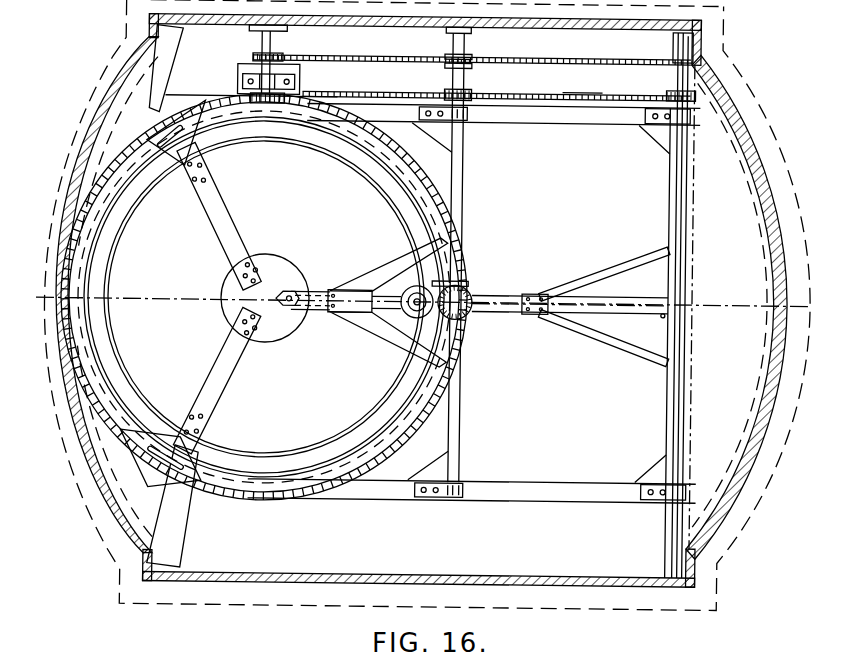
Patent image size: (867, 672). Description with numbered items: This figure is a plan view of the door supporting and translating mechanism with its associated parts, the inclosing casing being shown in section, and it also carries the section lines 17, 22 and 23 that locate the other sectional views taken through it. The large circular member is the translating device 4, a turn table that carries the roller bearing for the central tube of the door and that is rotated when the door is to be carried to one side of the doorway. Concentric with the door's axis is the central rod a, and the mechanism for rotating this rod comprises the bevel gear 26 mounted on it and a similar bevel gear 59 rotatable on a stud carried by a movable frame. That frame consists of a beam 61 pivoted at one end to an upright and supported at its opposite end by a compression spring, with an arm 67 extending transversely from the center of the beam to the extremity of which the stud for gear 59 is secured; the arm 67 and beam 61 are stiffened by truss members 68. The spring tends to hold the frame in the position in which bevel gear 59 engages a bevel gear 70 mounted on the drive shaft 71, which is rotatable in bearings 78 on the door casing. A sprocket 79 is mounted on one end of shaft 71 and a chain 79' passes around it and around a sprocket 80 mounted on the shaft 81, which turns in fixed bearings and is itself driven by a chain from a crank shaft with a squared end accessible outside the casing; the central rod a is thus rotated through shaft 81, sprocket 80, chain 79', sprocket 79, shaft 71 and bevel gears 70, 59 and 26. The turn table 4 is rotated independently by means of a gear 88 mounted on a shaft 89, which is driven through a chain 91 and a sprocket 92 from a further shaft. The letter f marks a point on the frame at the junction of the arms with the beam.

The translating device 4 is at (440, 384).
The section line 17— 17 is at (40, 322).
The section line 22— 22 is at (696, 153).
The section line 23— 23 is at (619, 21).
The bevel gear 26 is at (415, 311).
The bevel gear 59 is at (465, 317).
The beam 61 is at (686, 385).
The arm 67 is at (506, 292).
The truss member 68 is at (602, 276).
The bevel gear 70 is at (459, 280).
The drive shaft 71 is at (463, 181).
The bearings 78 is at (465, 112).
The sprocket 79 is at (496, 83).
The chain 79' is at (583, 82).
The sprocket 80 is at (675, 89).
The shaft 81 is at (674, 50).
The gear 88 is at (270, 105).
The shaft 89 is at (269, 49).
The chain 91 is at (514, 58).
The sprocket 92 is at (252, 58).
The central rod a is at (403, 303).
The pivot f is at (661, 315).